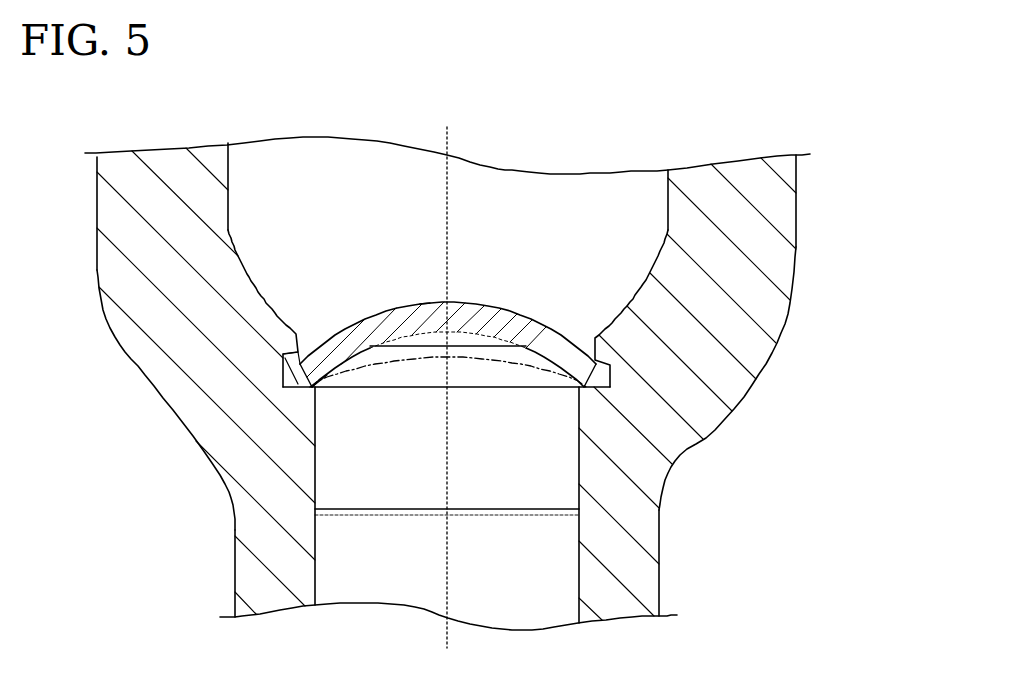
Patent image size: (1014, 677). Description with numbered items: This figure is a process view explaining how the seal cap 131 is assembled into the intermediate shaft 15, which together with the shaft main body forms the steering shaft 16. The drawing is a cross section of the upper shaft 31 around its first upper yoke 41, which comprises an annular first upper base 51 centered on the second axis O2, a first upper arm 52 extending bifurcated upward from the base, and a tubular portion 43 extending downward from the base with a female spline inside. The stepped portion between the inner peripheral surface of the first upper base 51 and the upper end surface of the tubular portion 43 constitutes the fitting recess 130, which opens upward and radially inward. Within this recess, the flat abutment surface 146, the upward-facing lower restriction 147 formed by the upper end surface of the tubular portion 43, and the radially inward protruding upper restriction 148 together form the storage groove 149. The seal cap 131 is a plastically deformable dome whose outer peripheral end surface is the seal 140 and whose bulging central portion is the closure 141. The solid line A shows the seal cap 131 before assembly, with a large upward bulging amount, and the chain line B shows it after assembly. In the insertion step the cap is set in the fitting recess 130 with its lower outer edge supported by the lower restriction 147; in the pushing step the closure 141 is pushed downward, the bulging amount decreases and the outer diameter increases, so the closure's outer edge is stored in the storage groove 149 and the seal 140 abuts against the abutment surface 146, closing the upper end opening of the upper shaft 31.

The intermediate shaft 15 is at (505, 123).
The steering shaft 16 is at (820, 121).
The upper shaft 31 is at (121, 497).
The first upper yoke 41 is at (467, 386).
The tubular portion 43 is at (648, 580).
The first upper base 51 is at (737, 390).
The first upper arm 52 is at (783, 212).
The fitting recess 130 is at (342, 360).
The seal cap 131 is at (450, 296).
The seal 140 is at (342, 314).
The closure 141 is at (472, 298).
The abutment surface 146 is at (313, 383).
The lower restriction 147 is at (362, 322).
The upper restriction 148 is at (283, 355).
The storage groove 149 is at (335, 295).
The solid line A is at (425, 303).
The chain line B is at (510, 380).
The second axis O2 is at (455, 132).